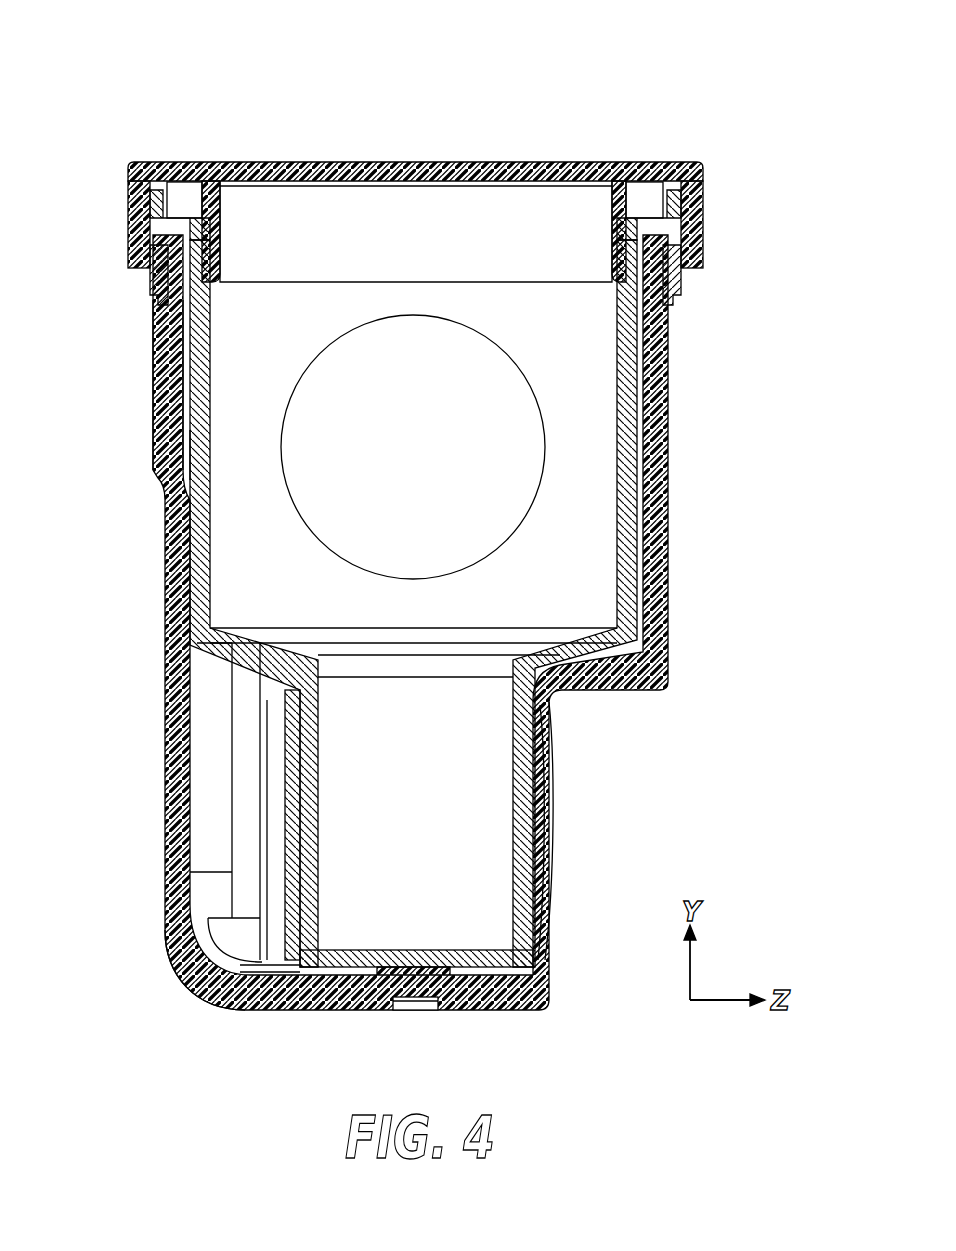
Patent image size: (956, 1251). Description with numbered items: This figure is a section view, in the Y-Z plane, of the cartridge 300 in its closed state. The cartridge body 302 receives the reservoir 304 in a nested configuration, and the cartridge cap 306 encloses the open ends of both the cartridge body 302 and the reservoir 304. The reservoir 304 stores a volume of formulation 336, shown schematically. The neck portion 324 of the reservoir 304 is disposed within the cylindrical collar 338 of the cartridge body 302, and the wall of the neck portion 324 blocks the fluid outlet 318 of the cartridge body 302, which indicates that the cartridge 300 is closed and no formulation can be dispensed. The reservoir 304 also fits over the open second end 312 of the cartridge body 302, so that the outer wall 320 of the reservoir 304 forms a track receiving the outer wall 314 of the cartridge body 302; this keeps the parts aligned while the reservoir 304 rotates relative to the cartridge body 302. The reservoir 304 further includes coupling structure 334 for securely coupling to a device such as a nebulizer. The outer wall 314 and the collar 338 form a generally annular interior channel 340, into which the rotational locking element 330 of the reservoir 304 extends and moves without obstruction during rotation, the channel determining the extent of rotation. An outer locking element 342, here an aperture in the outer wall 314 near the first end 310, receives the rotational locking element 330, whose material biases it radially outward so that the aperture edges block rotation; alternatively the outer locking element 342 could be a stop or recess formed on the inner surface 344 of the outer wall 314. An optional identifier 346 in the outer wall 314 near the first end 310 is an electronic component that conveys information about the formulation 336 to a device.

The cartridge 300 is at (714, 59).
The cartridge body 302 is at (661, 478).
The reservoir 304 is at (620, 383).
The cartridge cap 306 is at (705, 165).
The first end 310 is at (202, 993).
The open second end 312 is at (204, 162).
The outer wall 314 is at (160, 368).
The fluid outlet 318 is at (546, 850).
The outer wall 320 is at (198, 440).
The neck portion 324 is at (300, 712).
The rotational locking element 330 is at (256, 793).
The coupling structure 334 is at (684, 290).
The formulation 336 is at (431, 459).
The cylindrical collar 338 is at (286, 738).
The interior channel 340 is at (300, 1017).
The outer locking element 342 is at (232, 950).
The inner surface 344 is at (218, 888).
The identifier 346 is at (426, 1006).